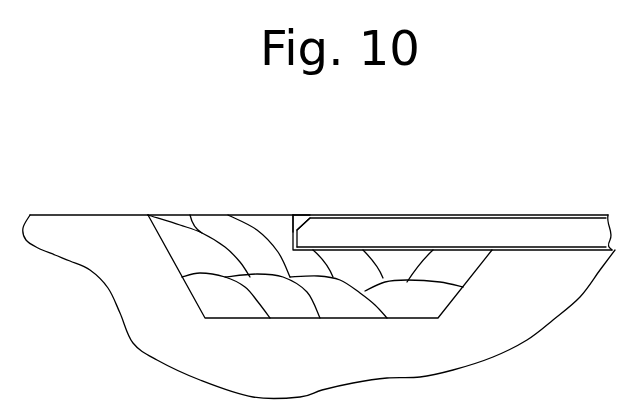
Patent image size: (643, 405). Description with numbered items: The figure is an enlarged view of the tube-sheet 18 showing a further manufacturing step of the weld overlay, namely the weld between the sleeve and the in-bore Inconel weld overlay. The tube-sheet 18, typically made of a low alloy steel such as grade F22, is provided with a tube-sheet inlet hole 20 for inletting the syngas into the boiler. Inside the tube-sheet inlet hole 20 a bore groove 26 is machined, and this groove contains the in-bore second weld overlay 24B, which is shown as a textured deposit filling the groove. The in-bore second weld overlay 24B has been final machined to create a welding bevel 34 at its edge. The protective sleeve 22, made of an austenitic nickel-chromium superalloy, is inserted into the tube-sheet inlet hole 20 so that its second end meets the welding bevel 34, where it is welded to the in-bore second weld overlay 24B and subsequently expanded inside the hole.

The tube-sheet 18 is at (520, 318).
The tube-sheet inlet hole 20 is at (90, 215).
The protective sleeve 22 is at (512, 215).
The in-bore second weld overlay 24B is at (251, 207).
The bore groove 26 is at (192, 295).
The welding bevel 34 is at (295, 215).